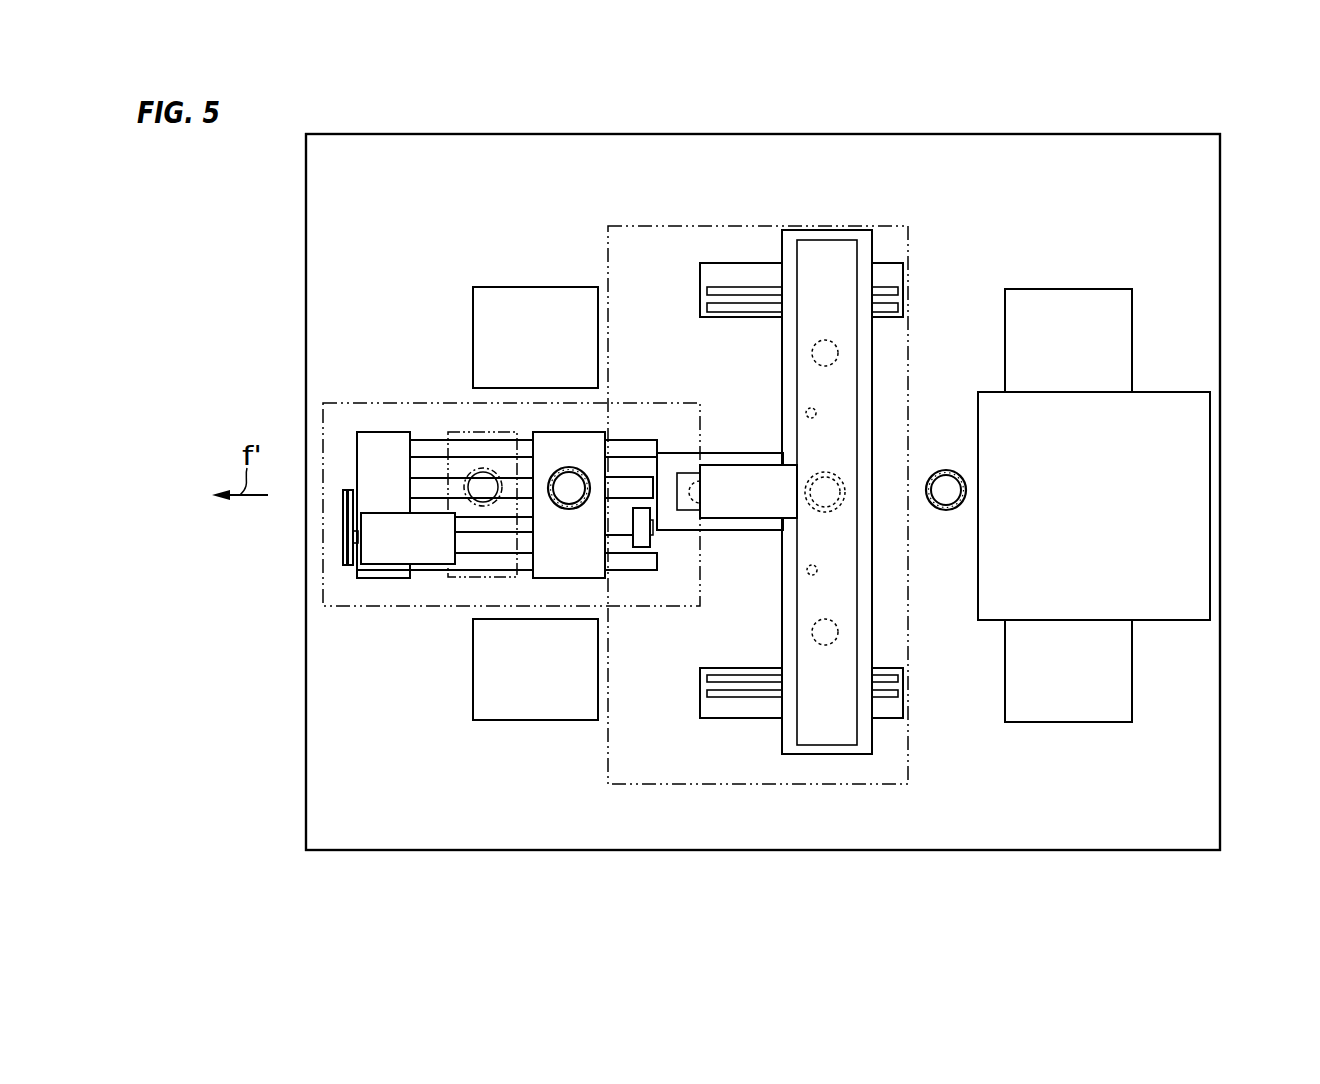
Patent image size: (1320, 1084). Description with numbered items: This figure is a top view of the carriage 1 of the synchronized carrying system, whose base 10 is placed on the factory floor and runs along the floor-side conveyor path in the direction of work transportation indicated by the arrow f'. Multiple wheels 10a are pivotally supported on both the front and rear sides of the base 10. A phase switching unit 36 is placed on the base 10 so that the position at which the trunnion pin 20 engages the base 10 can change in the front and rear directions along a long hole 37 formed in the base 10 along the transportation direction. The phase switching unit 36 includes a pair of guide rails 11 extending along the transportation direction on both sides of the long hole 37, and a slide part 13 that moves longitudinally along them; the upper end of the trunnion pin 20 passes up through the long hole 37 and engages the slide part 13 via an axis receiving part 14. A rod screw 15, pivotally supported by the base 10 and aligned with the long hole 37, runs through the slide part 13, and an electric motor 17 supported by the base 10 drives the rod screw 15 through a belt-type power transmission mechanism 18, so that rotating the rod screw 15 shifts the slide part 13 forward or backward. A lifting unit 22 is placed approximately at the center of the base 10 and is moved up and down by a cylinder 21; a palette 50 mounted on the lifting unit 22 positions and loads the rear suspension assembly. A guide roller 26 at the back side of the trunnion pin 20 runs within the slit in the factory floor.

The carriage 1 is at (1232, 229).
The base 10 is at (1205, 766).
The wheels 10a is at (507, 293).
The guide rails 11 is at (427, 447).
The slide part 13 is at (590, 443).
The axis receiving part 14 is at (563, 508).
The rod screw 15 is at (470, 565).
The electric motor 17 is at (420, 557).
The belt-type power transmission mechanism 18 is at (346, 568).
The trunnion pin 20 is at (577, 492).
The cylinder 21 is at (848, 495).
The lifting unit 22 is at (868, 568).
The guide roller 26 is at (944, 482).
The phase switching unit 36 is at (356, 392).
The long hole 37 is at (431, 485).
The palette 50 is at (905, 240).